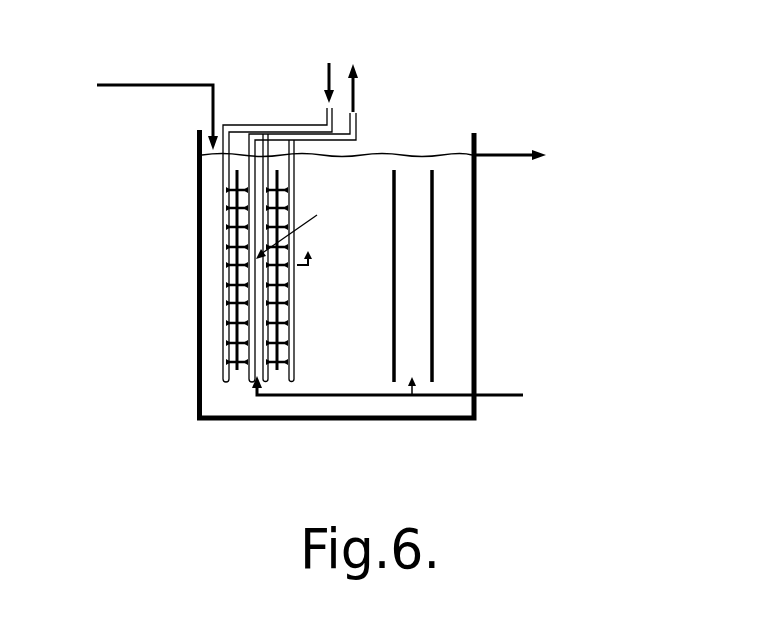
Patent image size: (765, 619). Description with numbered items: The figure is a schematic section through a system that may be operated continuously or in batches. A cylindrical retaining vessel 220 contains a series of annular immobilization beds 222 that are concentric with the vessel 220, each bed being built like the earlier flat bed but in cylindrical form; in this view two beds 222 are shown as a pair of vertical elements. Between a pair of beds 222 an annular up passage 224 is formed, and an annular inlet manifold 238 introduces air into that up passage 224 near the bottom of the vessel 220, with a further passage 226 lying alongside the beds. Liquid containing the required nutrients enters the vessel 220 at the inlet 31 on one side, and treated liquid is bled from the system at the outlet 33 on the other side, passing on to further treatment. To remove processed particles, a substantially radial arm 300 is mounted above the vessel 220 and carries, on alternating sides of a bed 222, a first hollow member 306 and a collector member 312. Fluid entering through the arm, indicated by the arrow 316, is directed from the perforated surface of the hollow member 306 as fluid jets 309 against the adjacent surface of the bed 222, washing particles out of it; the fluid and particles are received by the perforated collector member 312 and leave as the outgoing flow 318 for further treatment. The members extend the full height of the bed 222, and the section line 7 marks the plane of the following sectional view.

The retaining vessel 220 is at (476, 283).
The immobilization beds 222 is at (396, 217).
The up passage 224 is at (417, 228).
The passage 226 is at (452, 342).
The inlet manifold 238 is at (368, 399).
The radial arm 300 is at (232, 126).
The first hollow member 306 is at (262, 200).
The fluid jets 309 is at (235, 363).
The collector member 312 is at (283, 333).
The incoming fluid 316 is at (303, 75).
The outgoing fluid 318 is at (496, 71).
The liquid inlet 31 is at (158, 100).
The liquid bleed 33 is at (565, 143).
The section line 7- 7 is at (296, 237).